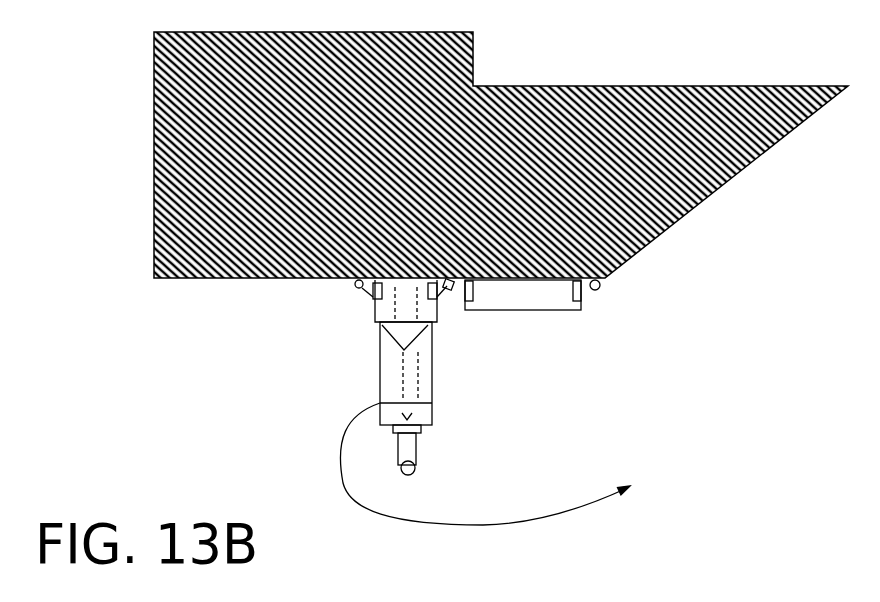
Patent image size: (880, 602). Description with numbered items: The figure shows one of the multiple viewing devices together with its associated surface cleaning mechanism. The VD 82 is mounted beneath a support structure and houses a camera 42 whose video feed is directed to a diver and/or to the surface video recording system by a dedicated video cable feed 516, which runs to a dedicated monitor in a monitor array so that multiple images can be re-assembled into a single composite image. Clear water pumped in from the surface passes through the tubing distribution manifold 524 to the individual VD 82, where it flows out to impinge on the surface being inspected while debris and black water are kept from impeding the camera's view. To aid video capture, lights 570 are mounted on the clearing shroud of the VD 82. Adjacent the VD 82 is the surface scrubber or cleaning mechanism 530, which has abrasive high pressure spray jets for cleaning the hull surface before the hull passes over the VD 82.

The camera 42 is at (380, 375).
The VD 82 is at (433, 387).
The video cable feed 516 is at (340, 480).
The tubing distribution manifold 524 is at (413, 475).
The surface scrubber or cleaning mechanism 530 is at (488, 298).
The lights 570 is at (380, 345).